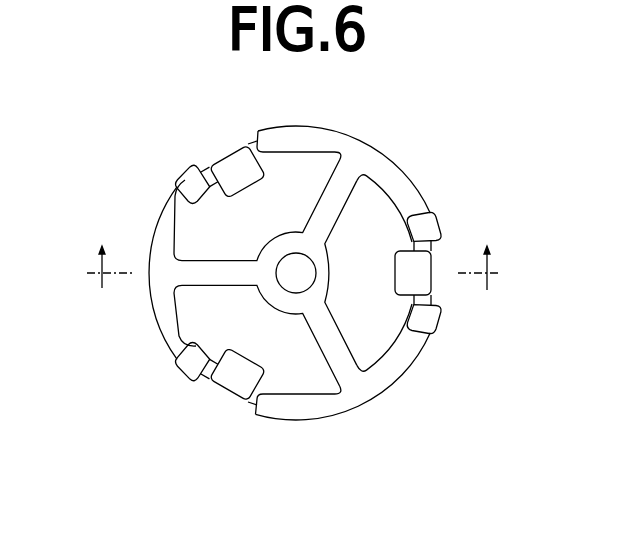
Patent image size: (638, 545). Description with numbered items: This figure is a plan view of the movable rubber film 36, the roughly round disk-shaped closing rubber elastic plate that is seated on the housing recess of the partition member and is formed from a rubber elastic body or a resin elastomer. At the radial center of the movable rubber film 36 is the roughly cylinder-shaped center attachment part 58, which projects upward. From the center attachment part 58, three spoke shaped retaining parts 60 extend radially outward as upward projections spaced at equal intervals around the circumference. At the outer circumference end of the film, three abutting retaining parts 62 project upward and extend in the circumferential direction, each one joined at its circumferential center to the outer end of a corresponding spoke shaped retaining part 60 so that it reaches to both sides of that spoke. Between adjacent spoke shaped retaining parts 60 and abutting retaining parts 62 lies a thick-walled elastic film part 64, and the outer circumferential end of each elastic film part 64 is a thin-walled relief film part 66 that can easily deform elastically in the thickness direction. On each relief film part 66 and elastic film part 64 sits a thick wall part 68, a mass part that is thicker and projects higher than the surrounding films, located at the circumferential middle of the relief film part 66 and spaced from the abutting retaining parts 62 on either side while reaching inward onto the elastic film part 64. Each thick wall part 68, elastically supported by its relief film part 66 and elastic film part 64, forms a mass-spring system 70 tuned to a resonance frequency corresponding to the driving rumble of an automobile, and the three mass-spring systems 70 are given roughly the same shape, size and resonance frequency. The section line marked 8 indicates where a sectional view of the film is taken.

The section line 8- 8 is at (293, 274).
The movable rubber film 36 is at (444, 145).
The center attachment part 58 is at (320, 258).
The spoke shaped retaining part 60 is at (328, 213).
The abutting retaining part 62 is at (326, 143).
The elastic film part 64 is at (220, 233).
The relief film part 66 is at (214, 165).
The thick wall part 68 is at (242, 163).
The mass-spring system 70 is at (213, 151).